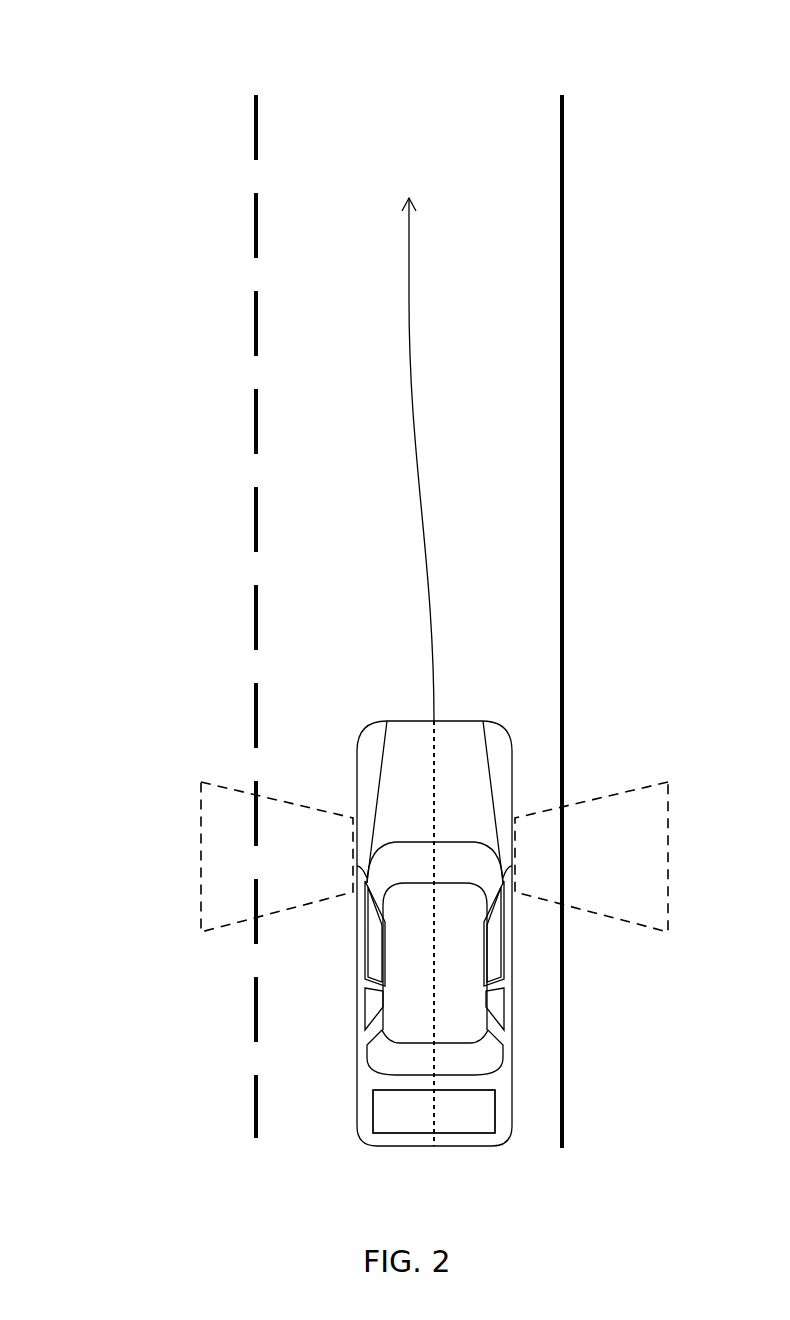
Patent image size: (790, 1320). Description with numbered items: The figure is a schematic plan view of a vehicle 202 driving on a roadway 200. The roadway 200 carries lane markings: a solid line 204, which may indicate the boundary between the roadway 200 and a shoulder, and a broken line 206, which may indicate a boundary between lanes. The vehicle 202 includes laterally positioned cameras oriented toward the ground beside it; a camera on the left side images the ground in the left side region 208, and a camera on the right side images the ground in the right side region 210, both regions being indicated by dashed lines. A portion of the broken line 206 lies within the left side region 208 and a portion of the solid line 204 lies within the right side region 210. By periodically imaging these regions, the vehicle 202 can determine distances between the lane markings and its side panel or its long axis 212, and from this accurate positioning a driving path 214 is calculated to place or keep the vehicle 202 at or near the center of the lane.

The roadway 200 is at (127, 64).
The vehicle 202 is at (469, 721).
The solid line 204 is at (563, 340).
The broken line 206 is at (255, 340).
The left side region 208 is at (206, 781).
The right side region 210 is at (643, 781).
The axis 212 is at (434, 1123).
The driving path 214 is at (408, 296).